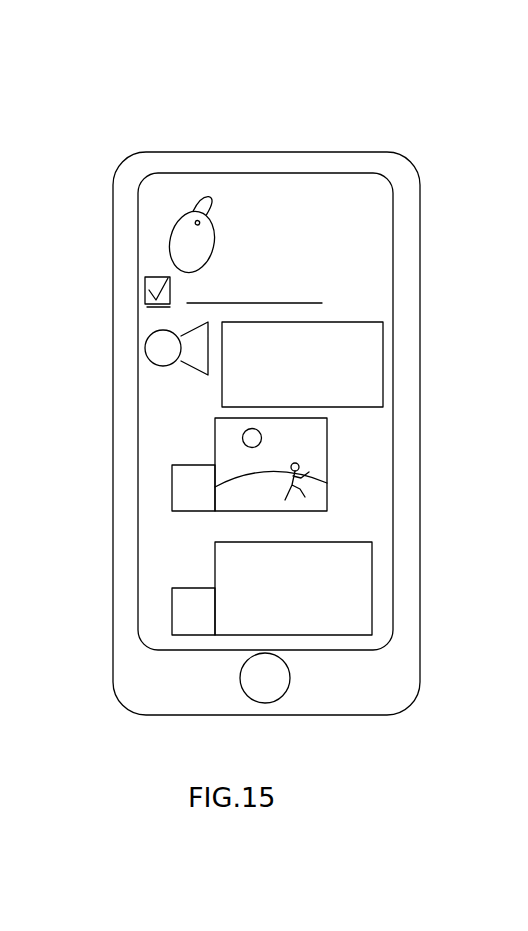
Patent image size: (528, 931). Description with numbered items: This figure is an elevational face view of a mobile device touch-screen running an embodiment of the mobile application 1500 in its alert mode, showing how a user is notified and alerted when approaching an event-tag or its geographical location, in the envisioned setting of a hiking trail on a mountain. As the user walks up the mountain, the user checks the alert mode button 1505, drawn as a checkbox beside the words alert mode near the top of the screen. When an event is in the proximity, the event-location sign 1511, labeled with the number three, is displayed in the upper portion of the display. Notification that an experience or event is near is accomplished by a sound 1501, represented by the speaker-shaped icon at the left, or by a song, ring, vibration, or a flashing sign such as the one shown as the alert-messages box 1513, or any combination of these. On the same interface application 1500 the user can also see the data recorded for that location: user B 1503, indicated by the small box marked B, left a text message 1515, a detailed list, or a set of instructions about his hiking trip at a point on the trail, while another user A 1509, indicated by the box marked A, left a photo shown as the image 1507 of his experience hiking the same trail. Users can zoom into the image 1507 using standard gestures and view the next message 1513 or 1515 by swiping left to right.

The mobile application 1500 is at (103, 135).
The sound 1501 is at (157, 352).
The user B 1503 is at (182, 597).
The alert mode button 1505 is at (322, 298).
The image 1507 is at (318, 448).
The user A 1509 is at (180, 487).
The event-location 3 sign 1511 is at (385, 237).
The flashing sign 1513 is at (372, 352).
The text message 1515 is at (357, 590).